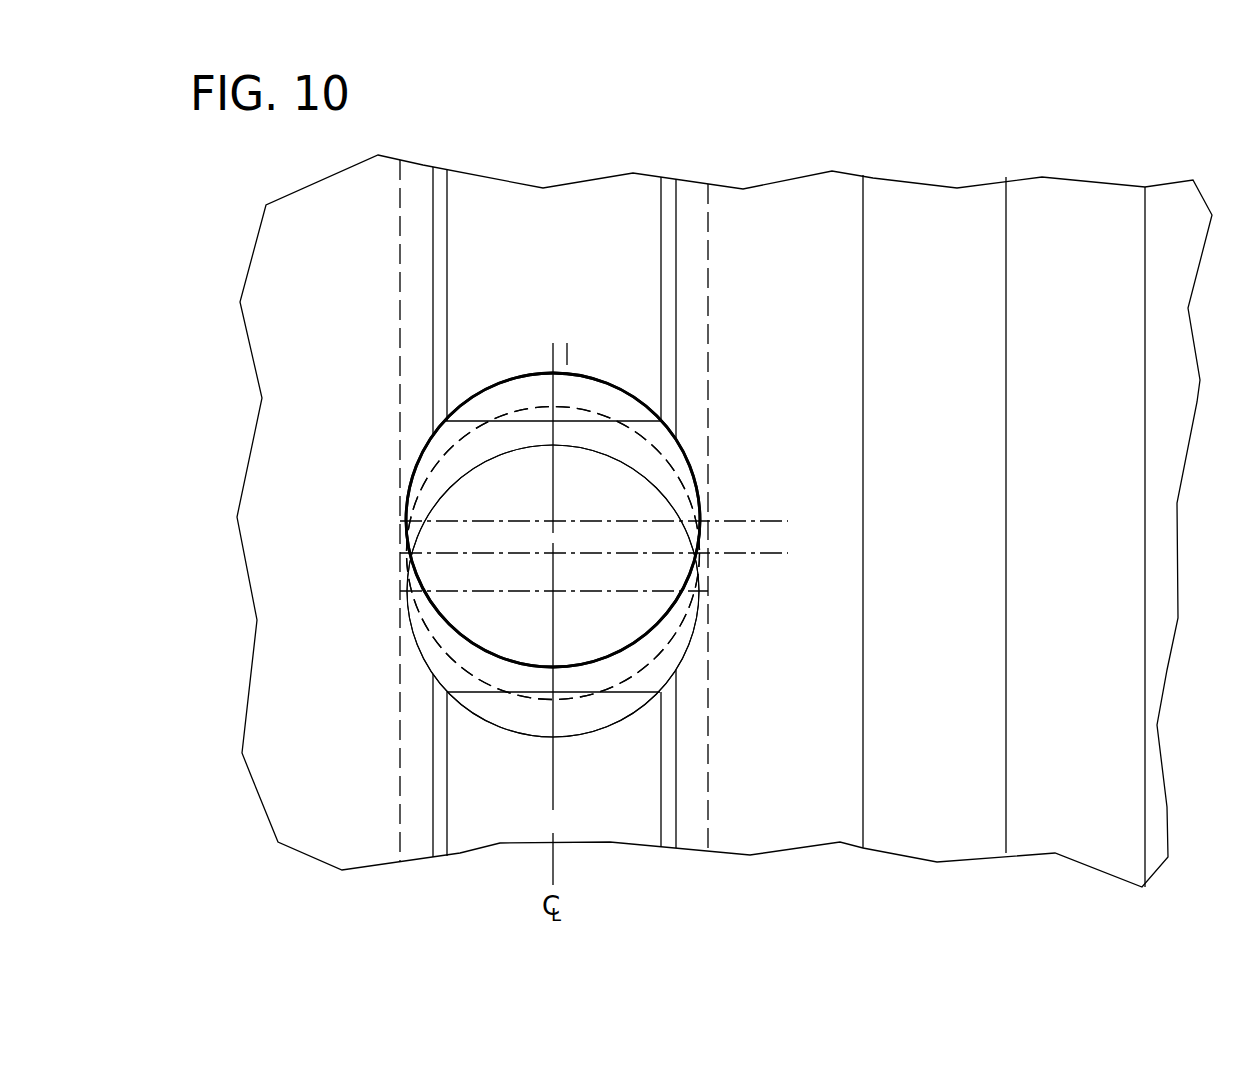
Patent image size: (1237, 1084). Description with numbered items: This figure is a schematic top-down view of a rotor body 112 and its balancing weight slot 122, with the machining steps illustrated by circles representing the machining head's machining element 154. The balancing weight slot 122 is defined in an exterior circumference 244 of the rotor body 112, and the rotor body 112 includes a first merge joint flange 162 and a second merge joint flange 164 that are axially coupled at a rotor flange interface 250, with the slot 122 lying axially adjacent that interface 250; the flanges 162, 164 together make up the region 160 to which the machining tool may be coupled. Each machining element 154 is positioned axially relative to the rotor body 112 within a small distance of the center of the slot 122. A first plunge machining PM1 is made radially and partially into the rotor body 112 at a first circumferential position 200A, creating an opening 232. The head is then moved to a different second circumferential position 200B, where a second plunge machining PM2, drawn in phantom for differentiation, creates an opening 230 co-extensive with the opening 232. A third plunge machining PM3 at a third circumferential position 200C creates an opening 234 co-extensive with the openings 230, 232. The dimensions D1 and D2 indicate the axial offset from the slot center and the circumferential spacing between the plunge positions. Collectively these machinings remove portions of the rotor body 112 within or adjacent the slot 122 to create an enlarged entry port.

The rotor body 112 is at (812, 717).
The balancing weight slot 122 is at (650, 322).
The machining element 154 is at (472, 712).
The ground region 160 is at (1145, 165).
The first merge joint flange 162 is at (953, 423).
The second merge joint flange 164 is at (1085, 423).
The first circumferential position 200A is at (427, 447).
The second circumferential position 200B is at (410, 555).
The third circumferential position 200C is at (413, 640).
The opening 230 is at (702, 553).
The opening 232 is at (684, 452).
The opening 234 is at (647, 705).
The exterior circumference 244 is at (808, 261).
The rotor flange interface 250 is at (1004, 803).
The first plunge machining PM1 is at (678, 445).
The second plunge machining PM2 is at (672, 641).
The third plunge machining PM3 is at (640, 712).
The first distance D1 is at (612, 354).
The second distance D2 is at (785, 590).